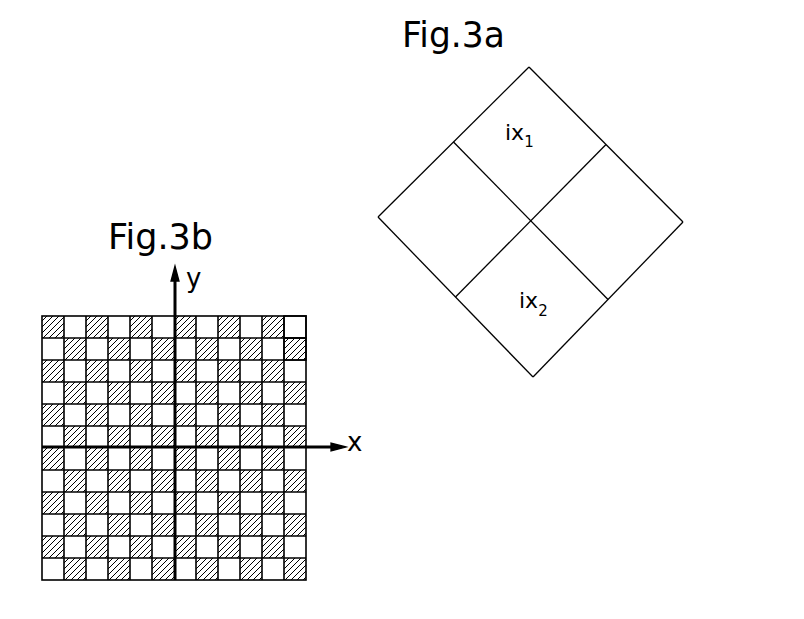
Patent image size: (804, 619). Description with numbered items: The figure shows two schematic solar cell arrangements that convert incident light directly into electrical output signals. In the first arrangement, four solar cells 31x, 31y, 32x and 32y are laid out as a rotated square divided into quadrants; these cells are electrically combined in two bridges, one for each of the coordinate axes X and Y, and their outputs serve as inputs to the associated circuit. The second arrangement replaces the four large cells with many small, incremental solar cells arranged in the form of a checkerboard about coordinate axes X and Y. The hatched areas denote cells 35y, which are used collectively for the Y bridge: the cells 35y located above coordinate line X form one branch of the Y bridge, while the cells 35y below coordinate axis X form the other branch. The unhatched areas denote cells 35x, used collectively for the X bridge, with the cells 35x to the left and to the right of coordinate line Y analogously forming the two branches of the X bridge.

In FIG. 3A, the solar cell 31x is at (477, 140).
In FIG. 3A, the solar cell 31y is at (412, 215).
In FIG. 3A, the solar cell 32x is at (518, 333).
In FIG. 3A, the solar cell 32y is at (640, 213).
In FIG. 3B, the incremental cells for X bridge 35x is at (297, 328).
In FIG. 3B, the incremental cells for Y bridge 35y is at (298, 350).